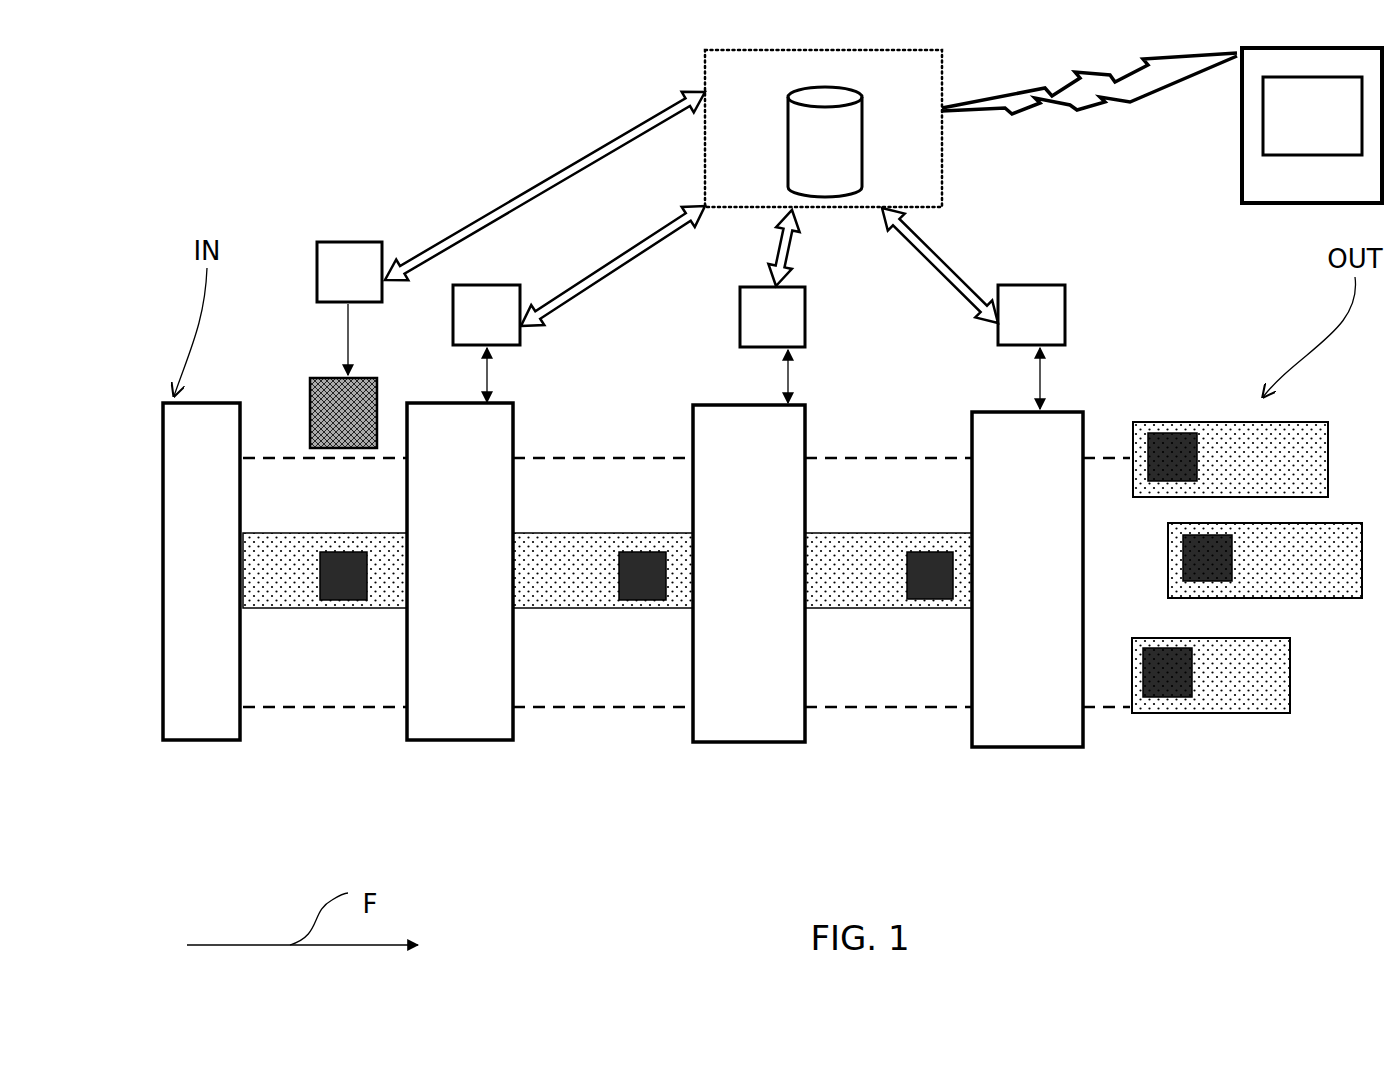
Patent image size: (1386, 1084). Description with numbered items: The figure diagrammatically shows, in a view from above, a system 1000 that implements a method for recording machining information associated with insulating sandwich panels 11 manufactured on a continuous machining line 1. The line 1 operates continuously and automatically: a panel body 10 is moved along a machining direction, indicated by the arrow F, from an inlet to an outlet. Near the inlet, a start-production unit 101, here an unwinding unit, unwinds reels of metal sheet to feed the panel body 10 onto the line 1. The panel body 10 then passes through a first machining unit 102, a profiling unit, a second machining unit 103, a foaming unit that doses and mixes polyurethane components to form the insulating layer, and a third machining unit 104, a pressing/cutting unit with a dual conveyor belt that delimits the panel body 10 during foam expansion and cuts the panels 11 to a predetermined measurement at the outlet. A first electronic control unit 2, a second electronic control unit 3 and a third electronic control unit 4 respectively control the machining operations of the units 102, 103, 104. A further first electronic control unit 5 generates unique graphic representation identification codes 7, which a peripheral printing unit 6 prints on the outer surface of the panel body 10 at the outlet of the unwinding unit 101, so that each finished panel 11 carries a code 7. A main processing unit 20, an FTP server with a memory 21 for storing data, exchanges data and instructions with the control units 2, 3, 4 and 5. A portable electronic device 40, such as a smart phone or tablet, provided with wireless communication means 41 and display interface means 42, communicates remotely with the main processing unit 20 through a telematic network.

The system 1000 is at (298, 172).
The continuous machining line 1 is at (609, 770).
The panel body 10 is at (277, 600).
The graphic representation identification code 7 is at (342, 602).
The insulating panel 11 is at (1197, 432).
The start-production unit 101 is at (217, 741).
The first machining unit 102 is at (450, 742).
The second machining unit 103 is at (728, 742).
The third machining unit 104 is at (1015, 747).
The peripheral printing unit 6 is at (318, 375).
The further first electronic control unit 5 is at (378, 242).
The first electronic control unit 2 is at (521, 333).
The second electronic control unit 3 is at (806, 318).
The third electronic control unit 4 is at (1066, 328).
The main processing unit 20 is at (705, 182).
The memory 21 is at (862, 137).
The portable electronic device 40 is at (1258, 203).
The wireless communication means 41 is at (1130, 106).
The display interface means 42 is at (1272, 148).